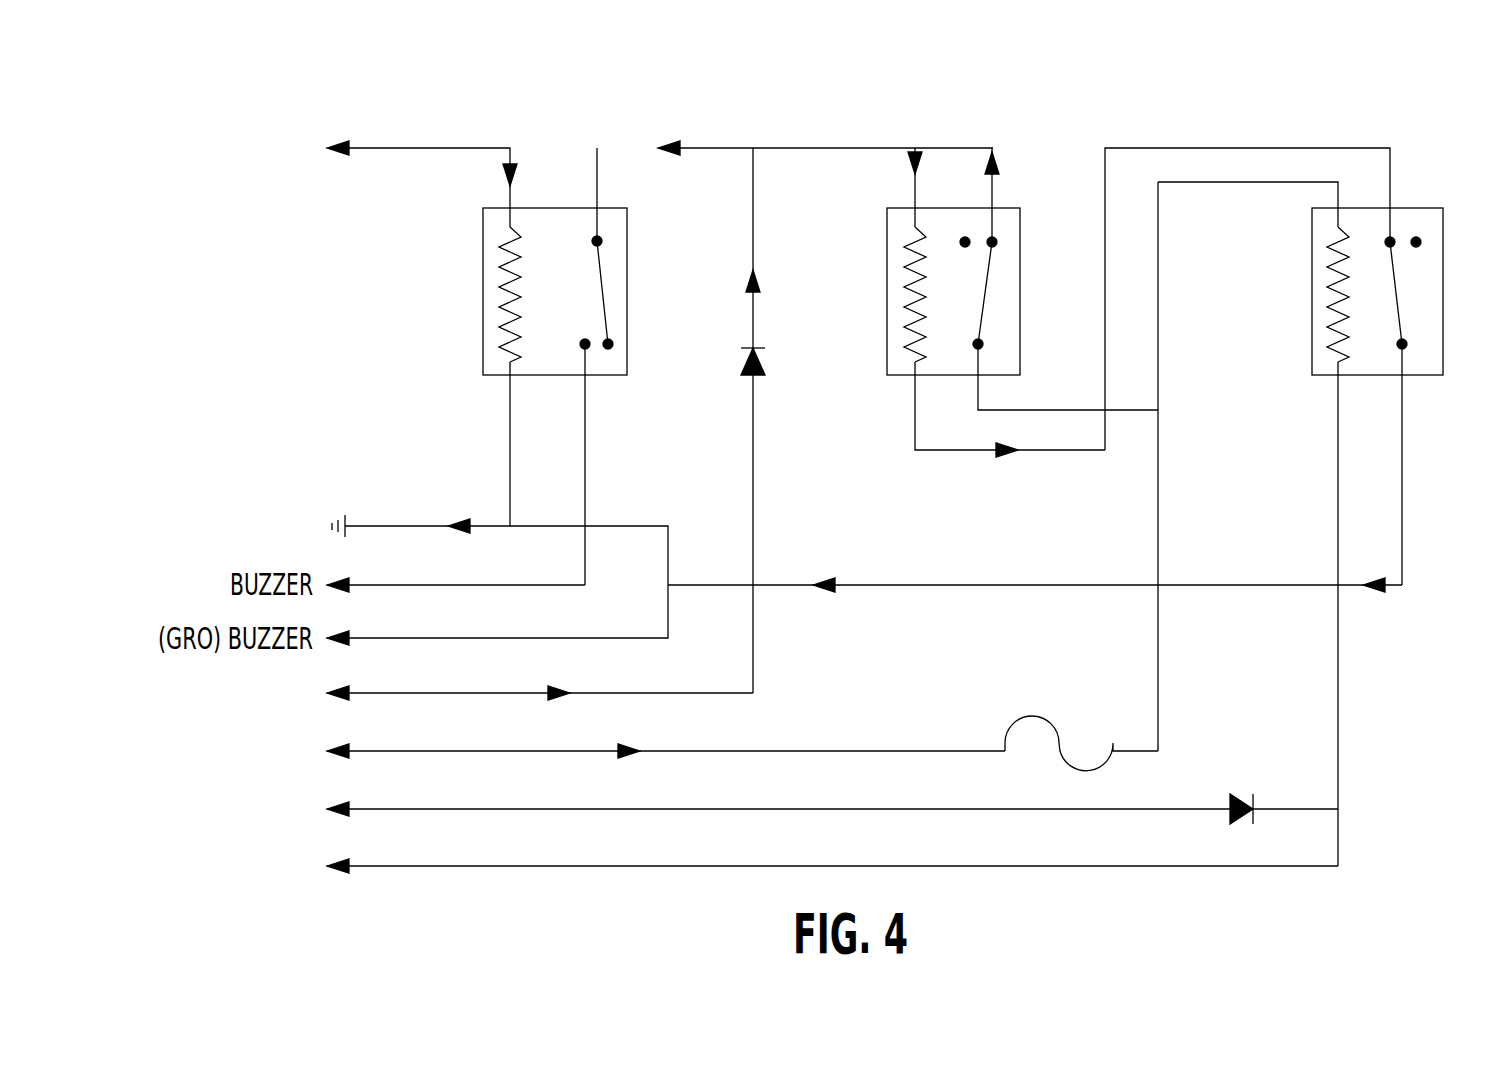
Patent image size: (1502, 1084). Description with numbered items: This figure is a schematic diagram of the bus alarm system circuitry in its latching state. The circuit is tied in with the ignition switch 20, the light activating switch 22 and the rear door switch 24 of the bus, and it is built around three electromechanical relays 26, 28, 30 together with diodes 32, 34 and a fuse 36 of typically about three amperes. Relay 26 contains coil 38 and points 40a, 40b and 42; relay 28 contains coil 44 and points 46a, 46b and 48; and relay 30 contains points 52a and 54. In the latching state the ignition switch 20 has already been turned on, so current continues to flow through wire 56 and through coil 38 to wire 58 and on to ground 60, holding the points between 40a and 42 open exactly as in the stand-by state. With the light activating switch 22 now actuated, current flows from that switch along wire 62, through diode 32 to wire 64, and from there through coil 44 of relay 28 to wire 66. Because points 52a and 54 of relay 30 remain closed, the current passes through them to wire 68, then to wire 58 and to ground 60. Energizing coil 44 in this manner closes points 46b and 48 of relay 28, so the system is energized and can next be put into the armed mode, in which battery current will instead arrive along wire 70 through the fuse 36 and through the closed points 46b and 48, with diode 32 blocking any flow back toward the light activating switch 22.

The ignition switch 20 is at (207, 164).
The light activating switch 22 is at (219, 709).
The rear door switch 24 is at (195, 903).
The relay 26 is at (483, 326).
The relay 28 is at (887, 300).
The relay 30 is at (1312, 291).
The diode 32 is at (765, 363).
The diode 34 is at (1240, 795).
The fuse 36 is at (1065, 706).
The coil 38 is at (500, 264).
The points 40a is at (585, 344).
The first relay fixed contact 40b is at (608, 344).
The points 42 is at (597, 241).
The coil 44 is at (905, 263).
The second relay contact 46a is at (965, 242).
The points 46b is at (992, 242).
The points 48 is at (978, 344).
The points 52a is at (1390, 242).
The points 54 is at (1402, 344).
The wire 56 is at (465, 148).
The wire 58 is at (635, 526).
The ground 60 is at (338, 512).
The wire 62 is at (753, 645).
The wire 64 is at (734, 148).
The wire 66 is at (1264, 148).
The wire 68 is at (688, 585).
The wire 70 is at (717, 751).